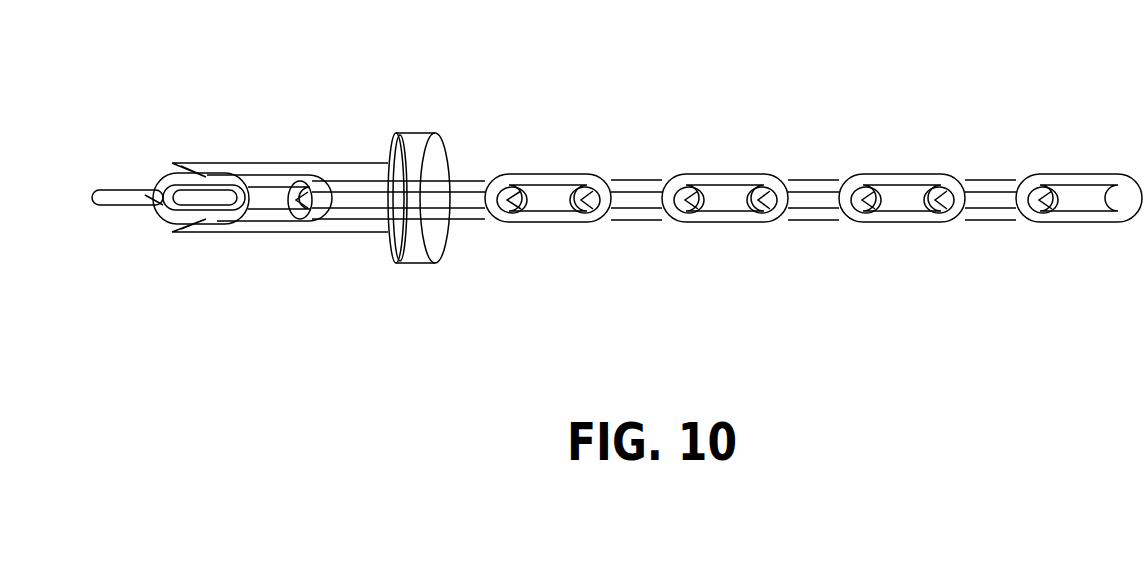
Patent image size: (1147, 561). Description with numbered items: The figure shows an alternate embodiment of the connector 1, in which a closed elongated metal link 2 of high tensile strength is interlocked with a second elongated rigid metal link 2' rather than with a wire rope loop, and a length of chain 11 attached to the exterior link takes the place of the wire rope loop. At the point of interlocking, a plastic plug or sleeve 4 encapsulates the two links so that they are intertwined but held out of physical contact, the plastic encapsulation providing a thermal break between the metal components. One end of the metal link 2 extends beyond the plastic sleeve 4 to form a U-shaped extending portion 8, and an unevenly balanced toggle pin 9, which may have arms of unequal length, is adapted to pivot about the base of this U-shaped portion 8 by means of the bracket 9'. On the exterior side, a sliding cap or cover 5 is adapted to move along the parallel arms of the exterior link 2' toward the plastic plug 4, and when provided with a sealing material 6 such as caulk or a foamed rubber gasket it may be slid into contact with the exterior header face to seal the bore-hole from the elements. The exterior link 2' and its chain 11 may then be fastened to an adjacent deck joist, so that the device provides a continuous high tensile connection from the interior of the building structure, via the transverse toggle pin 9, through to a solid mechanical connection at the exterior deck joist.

The connector 1 is at (932, 268).
The chain links 11 is at (1142, 152).
The closed elongated metal link 2 is at (268, 130).
The connecting rod 2' is at (407, 244).
The plastic plug or sleeve 4 is at (338, 163).
The sealing cap or cover 5 is at (445, 156).
The seal 6 is at (395, 133).
The U-shaped extending portion 8 is at (160, 183).
The toggle pin 9 is at (127, 254).
The bracket 9' is at (172, 257).